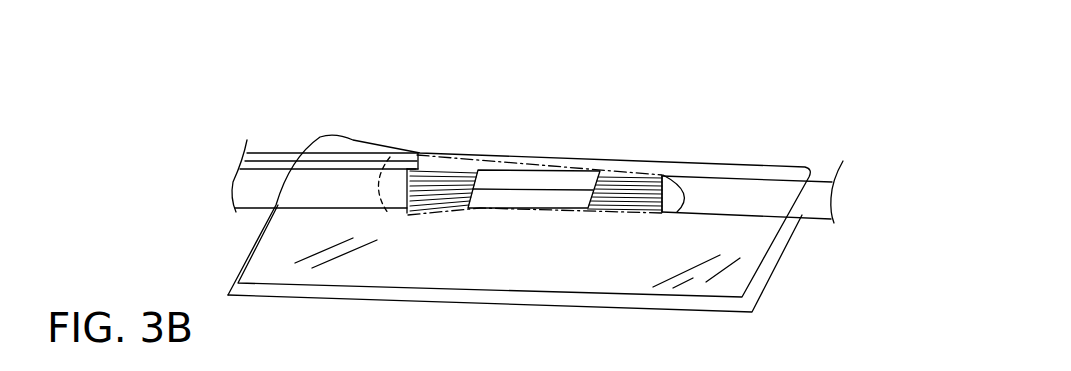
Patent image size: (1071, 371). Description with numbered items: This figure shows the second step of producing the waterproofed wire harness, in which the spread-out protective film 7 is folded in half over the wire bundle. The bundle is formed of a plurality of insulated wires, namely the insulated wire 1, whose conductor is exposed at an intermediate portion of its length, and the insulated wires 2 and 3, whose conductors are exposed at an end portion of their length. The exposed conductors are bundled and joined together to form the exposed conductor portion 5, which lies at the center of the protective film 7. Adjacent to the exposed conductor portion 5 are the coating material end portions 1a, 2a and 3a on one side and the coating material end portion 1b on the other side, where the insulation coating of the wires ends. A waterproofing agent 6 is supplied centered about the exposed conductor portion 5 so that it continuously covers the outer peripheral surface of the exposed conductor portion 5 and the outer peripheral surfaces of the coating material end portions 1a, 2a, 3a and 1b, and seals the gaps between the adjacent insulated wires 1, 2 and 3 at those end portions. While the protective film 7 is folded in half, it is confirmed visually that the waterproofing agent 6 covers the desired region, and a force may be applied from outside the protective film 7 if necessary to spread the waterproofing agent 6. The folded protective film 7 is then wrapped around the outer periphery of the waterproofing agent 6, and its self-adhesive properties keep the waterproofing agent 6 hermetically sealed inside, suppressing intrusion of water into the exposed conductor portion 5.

The insulated wire 1 is at (288, 157).
The coating material end portion 1a is at (404, 160).
The coating material end portion 1b is at (673, 200).
The insulated wire 2 is at (268, 154).
The coating material end portion 2a is at (397, 170).
The insulated wire 3 is at (250, 190).
The coating material end portion 3a is at (395, 195).
The exposed conductor portion 5 is at (425, 143).
The waterproofing agent 6 is at (428, 213).
The protective film 7 is at (765, 267).